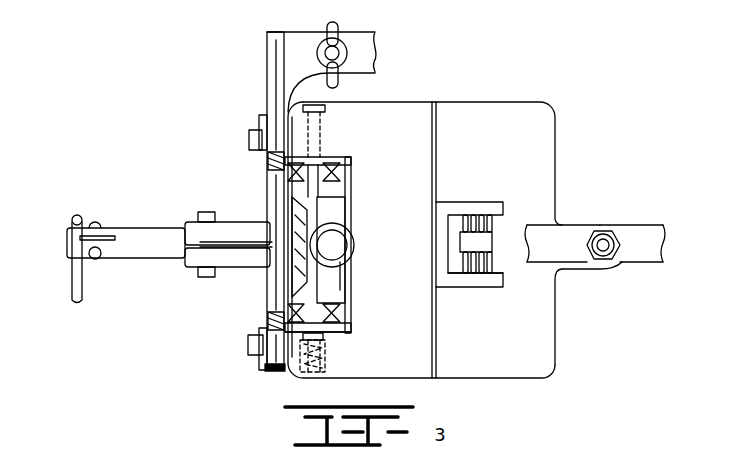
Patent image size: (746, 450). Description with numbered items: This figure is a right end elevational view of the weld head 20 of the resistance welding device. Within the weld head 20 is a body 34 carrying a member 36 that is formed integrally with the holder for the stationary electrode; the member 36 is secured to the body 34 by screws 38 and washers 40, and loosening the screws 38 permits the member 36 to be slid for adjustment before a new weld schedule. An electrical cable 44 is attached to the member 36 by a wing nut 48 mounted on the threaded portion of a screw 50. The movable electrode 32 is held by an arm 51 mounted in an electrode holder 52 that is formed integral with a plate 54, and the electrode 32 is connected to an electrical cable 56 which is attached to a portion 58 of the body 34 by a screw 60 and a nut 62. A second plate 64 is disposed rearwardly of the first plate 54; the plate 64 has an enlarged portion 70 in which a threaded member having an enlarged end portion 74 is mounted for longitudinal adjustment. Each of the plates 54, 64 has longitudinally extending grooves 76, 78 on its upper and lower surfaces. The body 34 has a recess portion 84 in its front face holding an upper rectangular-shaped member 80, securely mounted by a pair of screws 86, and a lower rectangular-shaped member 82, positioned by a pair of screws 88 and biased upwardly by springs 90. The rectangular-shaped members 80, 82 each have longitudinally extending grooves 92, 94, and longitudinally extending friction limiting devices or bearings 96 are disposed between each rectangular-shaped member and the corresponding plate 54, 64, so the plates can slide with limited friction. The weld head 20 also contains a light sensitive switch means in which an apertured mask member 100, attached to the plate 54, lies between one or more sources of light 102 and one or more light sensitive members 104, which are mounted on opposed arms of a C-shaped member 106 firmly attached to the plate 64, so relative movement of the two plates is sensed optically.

The weld head 20 is at (258, 78).
The electrode 32 is at (72, 276).
The body 34 is at (433, 102).
The member 36 is at (266, 95).
The screws 38 is at (249, 138).
The washers 40 is at (261, 118).
The electrical cable 44 is at (378, 50).
The wing nut 48 is at (340, 32).
The screw 50 is at (326, 44).
The arm 51 is at (105, 228).
The electrode holder 52 is at (186, 262).
The plate 54 is at (291, 275).
The electrical cable 56 is at (645, 232).
The portion of the body 58 is at (567, 225).
The screw 60 is at (611, 230).
The nut 62 is at (590, 264).
The second plate 64 is at (348, 207).
The enlarged portion 70 is at (354, 240).
The enlarged end portion 74 is at (340, 247).
The grooves 76 is at (300, 175).
The grooves 78 is at (351, 180).
The upper rectangular-shaped member 80 is at (323, 145).
The lower rectangular-shaped member 82 is at (336, 336).
The recess portion 84 is at (358, 275).
The screws 86 is at (337, 114).
The screws 88 is at (330, 369).
The springs 90 is at (295, 371).
The grooves 92 is at (282, 160).
The grooves 94 is at (295, 328).
The friction limiting devices or bearings 96 is at (288, 176).
The apertured mask member 100 is at (492, 240).
The sources of light 102 is at (477, 273).
The light sensitive members 104 is at (478, 215).
The C-shaped member 106 is at (466, 290).